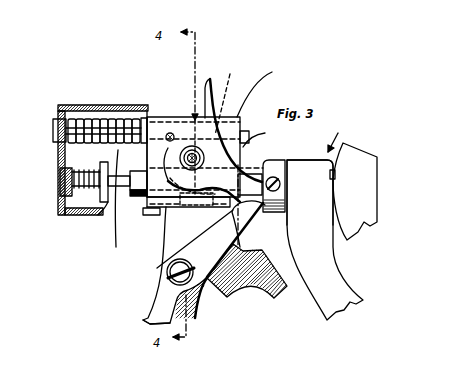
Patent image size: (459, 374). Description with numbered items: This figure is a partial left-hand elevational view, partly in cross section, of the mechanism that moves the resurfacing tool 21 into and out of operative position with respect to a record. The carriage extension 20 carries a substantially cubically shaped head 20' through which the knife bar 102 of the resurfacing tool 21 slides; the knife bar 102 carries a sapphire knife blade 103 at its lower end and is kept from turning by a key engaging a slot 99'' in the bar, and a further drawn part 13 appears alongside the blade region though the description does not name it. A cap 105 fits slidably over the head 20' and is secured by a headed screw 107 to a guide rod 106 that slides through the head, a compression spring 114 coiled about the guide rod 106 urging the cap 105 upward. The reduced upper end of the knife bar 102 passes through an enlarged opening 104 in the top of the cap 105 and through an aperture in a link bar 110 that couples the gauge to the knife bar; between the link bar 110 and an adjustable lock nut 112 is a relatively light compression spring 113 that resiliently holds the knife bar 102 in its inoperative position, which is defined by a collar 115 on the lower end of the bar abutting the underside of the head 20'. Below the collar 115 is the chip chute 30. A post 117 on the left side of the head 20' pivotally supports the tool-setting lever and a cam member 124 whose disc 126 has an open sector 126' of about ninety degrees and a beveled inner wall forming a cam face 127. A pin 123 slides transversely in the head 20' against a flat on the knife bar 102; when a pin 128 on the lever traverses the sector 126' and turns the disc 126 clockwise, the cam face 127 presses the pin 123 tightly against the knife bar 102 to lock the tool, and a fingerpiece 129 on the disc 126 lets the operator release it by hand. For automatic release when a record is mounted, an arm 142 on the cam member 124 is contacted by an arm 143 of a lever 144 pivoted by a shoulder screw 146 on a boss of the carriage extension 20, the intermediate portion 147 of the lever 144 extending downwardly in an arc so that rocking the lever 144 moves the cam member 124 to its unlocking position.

The cap 105 is at (72, 104).
The headed screw 107 is at (56, 127).
The compression spring 114 is at (83, 145).
The enlarged opening 104 is at (55, 193).
The adjustable lock nut 112 is at (63, 213).
The compression spring 113 is at (84, 192).
The link bar 110 is at (99, 206).
The knife bar 102 is at (274, 146).
The open sector 126' is at (205, 146).
The cam face 127 is at (196, 200).
The pin 128 is at (168, 134).
The fingerpiece 129 is at (207, 86).
The post 117 is at (215, 117).
The disc 126 is at (224, 100).
The head 20' is at (263, 91).
The guide rod 106 is at (245, 131).
The cam member 124 is at (265, 136).
The arm 142 is at (250, 184).
The chip chute 30 is at (320, 261).
The collar 115 is at (283, 173).
The plate 13 is at (367, 185).
The knife blade 103 is at (340, 182).
The resurfacing tool 21 is at (340, 136).
The carriage extension 20 is at (169, 265).
The intermediate portion 147 is at (153, 308).
The lever 144 is at (166, 267).
The shoulder screw 146 is at (168, 285).
The slot 99'' is at (150, 220).
The pin 123 is at (195, 239).
The arm 143 is at (232, 235).